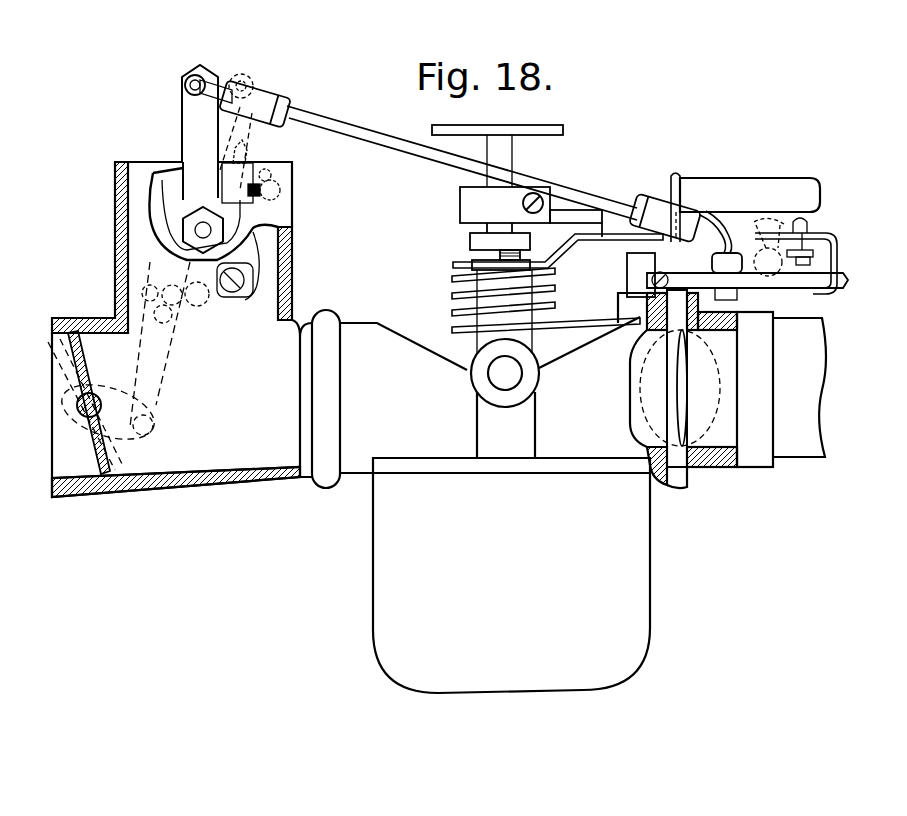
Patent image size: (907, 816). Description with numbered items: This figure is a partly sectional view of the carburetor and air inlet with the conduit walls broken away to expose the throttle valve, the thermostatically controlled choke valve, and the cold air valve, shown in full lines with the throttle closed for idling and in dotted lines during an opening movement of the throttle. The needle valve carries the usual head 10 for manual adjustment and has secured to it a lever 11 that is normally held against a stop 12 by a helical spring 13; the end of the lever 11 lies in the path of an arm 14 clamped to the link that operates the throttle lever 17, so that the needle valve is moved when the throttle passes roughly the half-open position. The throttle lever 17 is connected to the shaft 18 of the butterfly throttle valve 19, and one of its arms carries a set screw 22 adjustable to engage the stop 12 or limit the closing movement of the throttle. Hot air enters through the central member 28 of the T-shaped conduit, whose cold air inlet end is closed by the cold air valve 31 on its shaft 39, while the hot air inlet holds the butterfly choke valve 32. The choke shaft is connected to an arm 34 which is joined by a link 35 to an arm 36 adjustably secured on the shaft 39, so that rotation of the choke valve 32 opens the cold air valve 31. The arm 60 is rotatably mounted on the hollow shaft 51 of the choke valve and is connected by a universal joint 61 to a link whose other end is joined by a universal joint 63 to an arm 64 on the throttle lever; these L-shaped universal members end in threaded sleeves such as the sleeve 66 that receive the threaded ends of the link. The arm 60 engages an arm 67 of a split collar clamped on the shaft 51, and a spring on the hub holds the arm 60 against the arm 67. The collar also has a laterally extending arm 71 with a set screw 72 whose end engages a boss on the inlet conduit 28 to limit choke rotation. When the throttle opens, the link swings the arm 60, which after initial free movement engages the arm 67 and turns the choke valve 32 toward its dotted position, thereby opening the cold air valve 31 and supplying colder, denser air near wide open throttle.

The head 10 is at (535, 125).
The lever 11 is at (758, 187).
The stop 12 is at (627, 275).
The helical spring 13 is at (456, 276).
The arm 14 is at (680, 174).
The throttle lever 17 is at (812, 293).
The shaft 18 is at (677, 317).
The throttle valve 19 is at (687, 381).
The set screw 22 is at (647, 282).
The central member of T-shaped conduit 28 is at (293, 270).
The cold air valve 31 is at (76, 350).
The choke valve 32 is at (257, 292).
The arm 34 is at (173, 325).
The link 35 is at (168, 357).
The arm 36 is at (128, 452).
The shaft 39 is at (77, 406).
The hollow shaft 51 is at (196, 230).
The arm 60 is at (190, 118).
The universal joint 61 is at (196, 80).
The universal joint 63 is at (742, 268).
The arm 64 is at (748, 275).
The internally screw-threaded sleeve 66 is at (660, 210).
The arm 67 is at (245, 146).
The laterally extending arm 71 is at (276, 192).
The set screw 72 is at (275, 175).